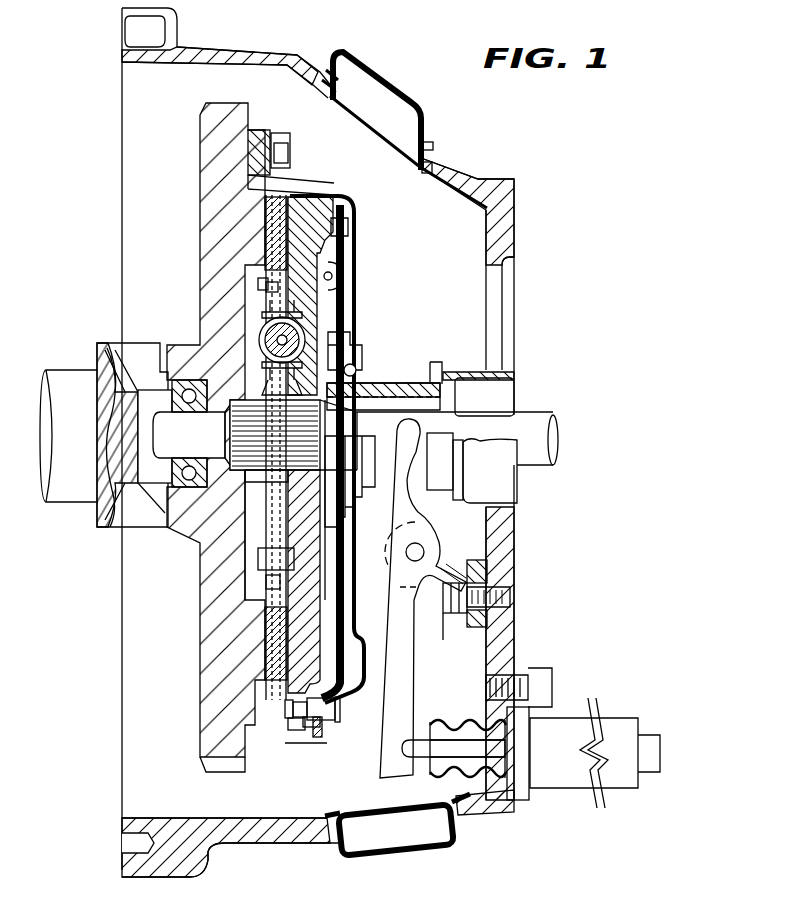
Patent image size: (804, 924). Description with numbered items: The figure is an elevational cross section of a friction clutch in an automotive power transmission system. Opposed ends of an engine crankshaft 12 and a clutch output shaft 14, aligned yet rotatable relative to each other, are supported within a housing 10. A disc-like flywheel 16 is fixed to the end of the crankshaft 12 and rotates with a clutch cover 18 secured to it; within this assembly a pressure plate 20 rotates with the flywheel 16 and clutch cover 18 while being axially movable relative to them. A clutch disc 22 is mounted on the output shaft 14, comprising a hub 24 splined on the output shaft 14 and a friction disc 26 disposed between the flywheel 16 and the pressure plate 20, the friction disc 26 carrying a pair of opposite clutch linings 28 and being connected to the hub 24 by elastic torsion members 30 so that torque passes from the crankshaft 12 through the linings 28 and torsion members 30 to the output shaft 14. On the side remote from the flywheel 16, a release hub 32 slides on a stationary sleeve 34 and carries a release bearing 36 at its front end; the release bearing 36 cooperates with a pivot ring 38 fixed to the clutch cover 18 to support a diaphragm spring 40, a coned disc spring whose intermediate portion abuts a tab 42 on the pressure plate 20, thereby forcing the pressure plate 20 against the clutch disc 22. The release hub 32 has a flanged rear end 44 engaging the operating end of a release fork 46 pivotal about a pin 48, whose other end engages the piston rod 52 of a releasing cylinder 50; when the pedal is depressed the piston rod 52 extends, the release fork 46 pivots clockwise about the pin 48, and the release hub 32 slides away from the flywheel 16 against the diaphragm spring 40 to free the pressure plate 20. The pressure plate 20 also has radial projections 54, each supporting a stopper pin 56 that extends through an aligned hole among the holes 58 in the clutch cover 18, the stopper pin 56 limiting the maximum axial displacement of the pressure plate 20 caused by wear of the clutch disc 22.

The housing 10 is at (274, 60).
The crankshaft 12 is at (70, 374).
The output shaft 14 is at (532, 424).
The flywheel 16 is at (214, 184).
The clutch cover 18 is at (358, 206).
The pressure plate 20 is at (303, 194).
The clutch disc 22 is at (248, 282).
The hub 24 is at (183, 530).
The friction disc 26 is at (265, 307).
The clutch linings 28 is at (333, 228).
The elastic torsion members 30 is at (292, 338).
The release hub 32 is at (396, 380).
The stationary sleeve 34 is at (444, 390).
The release bearing 36 is at (363, 358).
The pivot ring 38 is at (351, 192).
The diaphragm spring 40 is at (345, 272).
The tab 42 is at (327, 620).
The flanged rear end 44 is at (433, 360).
The release fork 46 is at (408, 672).
The pin 48 is at (417, 547).
The releasing cylinder 50 is at (618, 727).
The piston rod 52 is at (420, 743).
The radial projections 54 is at (300, 743).
The stopper pin 56 is at (328, 733).
The holes 58 is at (315, 741).